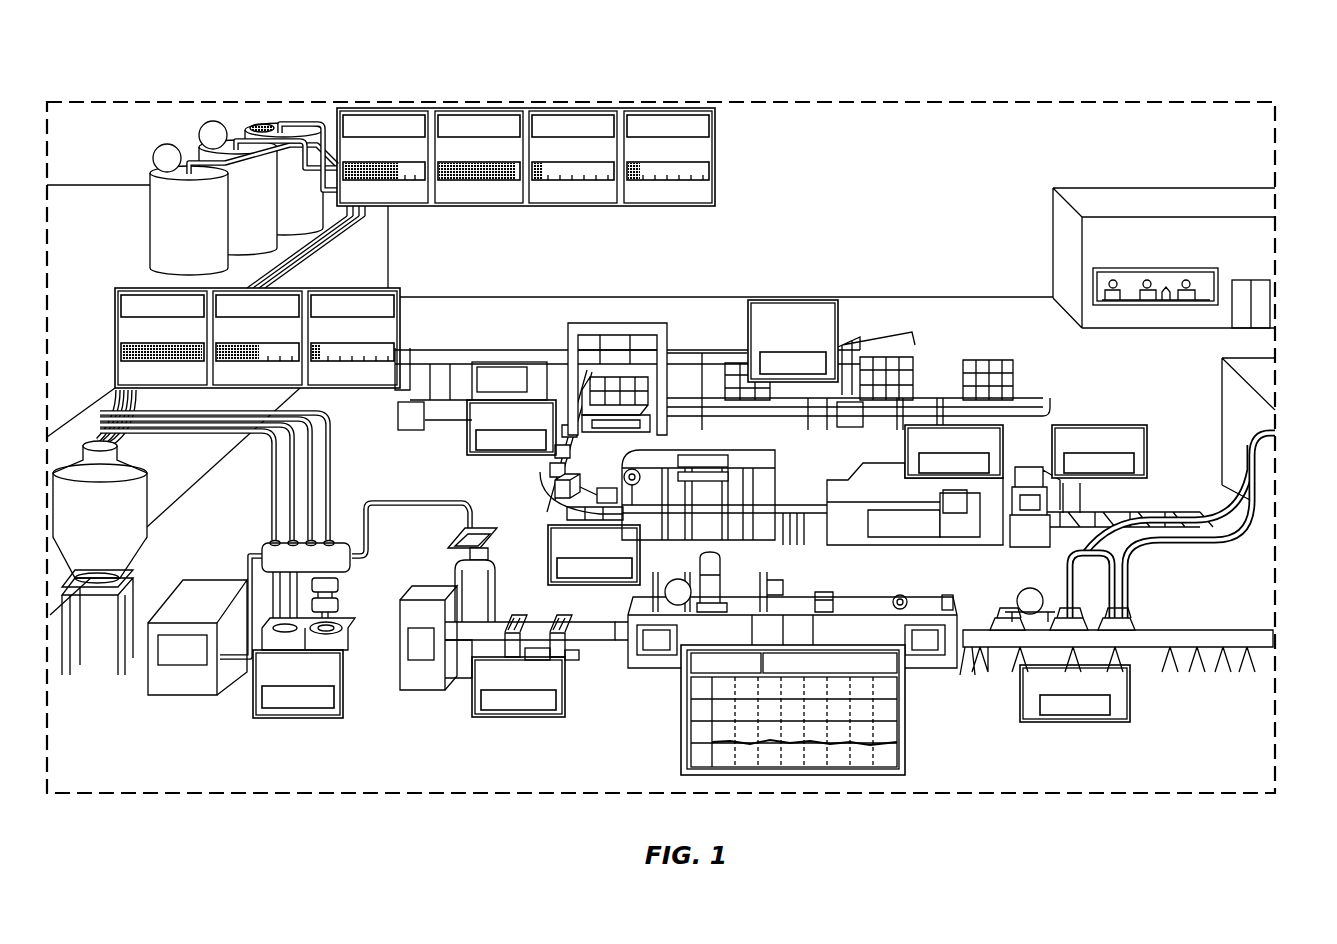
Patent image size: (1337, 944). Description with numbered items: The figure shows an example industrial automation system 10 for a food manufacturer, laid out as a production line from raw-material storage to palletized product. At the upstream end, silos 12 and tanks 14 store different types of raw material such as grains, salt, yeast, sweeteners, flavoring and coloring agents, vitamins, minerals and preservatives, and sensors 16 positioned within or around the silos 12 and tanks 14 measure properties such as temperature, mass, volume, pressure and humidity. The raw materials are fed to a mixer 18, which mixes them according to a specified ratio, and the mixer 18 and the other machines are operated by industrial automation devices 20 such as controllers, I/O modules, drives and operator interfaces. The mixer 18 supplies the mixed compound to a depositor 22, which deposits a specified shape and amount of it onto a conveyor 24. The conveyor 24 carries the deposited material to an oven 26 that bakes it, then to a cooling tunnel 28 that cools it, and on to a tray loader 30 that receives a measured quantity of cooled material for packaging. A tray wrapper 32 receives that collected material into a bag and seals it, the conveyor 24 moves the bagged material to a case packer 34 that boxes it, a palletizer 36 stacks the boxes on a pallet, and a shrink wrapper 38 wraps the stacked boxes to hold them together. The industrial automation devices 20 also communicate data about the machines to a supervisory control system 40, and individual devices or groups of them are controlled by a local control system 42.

The industrial automation system 10 is at (1203, 58).
The silos 12 is at (262, 126).
The tanks 14 is at (106, 347).
The sensors 16 is at (166, 142).
The mixer 18 is at (347, 670).
The industrial automation devices 20 is at (180, 697).
The depositor 22 is at (580, 657).
The conveyor 24 is at (806, 490).
The oven 26 is at (872, 596).
The cooling tunnel 28 is at (1130, 643).
The tray loader 30 is at (1148, 456).
The tray wrapper 32 is at (901, 441).
The case packer 34 is at (546, 550).
The palletizer 36 is at (450, 443).
The shrink wrapper 38 is at (846, 330).
The supervisory control system 40 is at (1165, 283).
The local control system 42 is at (178, 665).